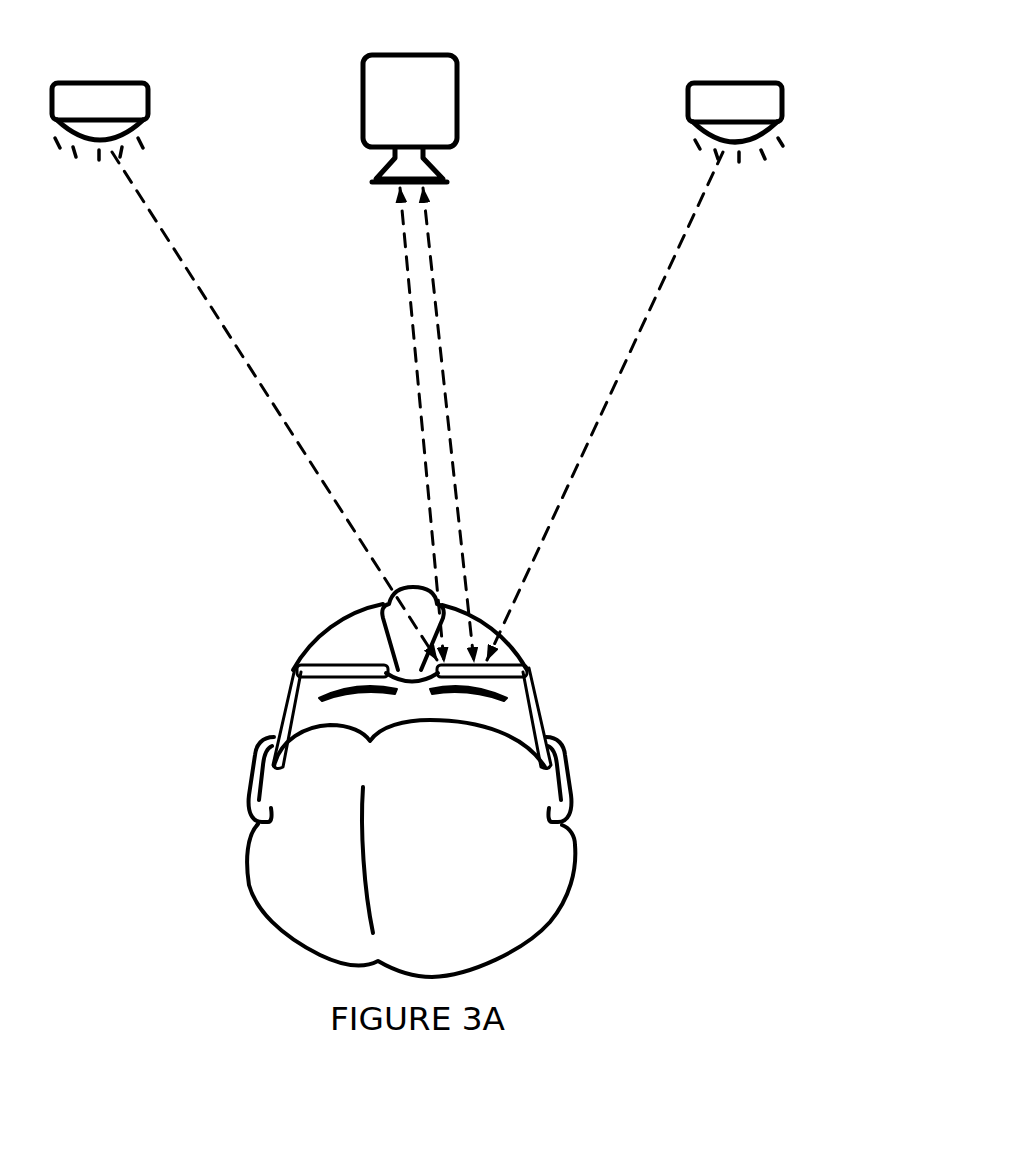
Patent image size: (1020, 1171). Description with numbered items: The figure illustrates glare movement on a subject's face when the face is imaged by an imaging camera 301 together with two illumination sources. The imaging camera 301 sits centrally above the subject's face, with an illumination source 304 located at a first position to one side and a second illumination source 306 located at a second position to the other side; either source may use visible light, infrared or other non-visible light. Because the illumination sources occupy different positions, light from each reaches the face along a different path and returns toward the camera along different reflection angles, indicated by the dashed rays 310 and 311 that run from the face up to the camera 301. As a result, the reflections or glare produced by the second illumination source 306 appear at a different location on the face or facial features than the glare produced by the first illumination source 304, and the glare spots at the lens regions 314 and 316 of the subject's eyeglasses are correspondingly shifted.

The imaging camera 301 is at (462, 103).
The illumination source 304 is at (152, 103).
The second illumination source 306 is at (790, 103).
The reflected light ray 310 is at (411, 358).
The reflection angle 311 is at (442, 358).
The eyeglass lens (right) 314 is at (481, 661).
The eyeglass lens (left) 316 is at (430, 658).